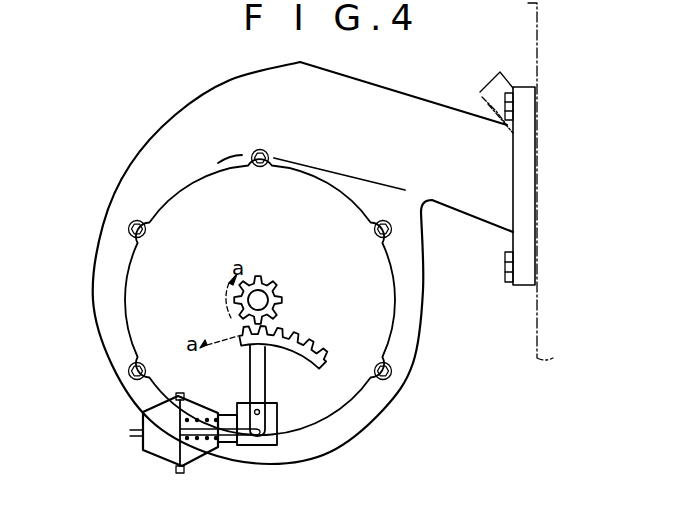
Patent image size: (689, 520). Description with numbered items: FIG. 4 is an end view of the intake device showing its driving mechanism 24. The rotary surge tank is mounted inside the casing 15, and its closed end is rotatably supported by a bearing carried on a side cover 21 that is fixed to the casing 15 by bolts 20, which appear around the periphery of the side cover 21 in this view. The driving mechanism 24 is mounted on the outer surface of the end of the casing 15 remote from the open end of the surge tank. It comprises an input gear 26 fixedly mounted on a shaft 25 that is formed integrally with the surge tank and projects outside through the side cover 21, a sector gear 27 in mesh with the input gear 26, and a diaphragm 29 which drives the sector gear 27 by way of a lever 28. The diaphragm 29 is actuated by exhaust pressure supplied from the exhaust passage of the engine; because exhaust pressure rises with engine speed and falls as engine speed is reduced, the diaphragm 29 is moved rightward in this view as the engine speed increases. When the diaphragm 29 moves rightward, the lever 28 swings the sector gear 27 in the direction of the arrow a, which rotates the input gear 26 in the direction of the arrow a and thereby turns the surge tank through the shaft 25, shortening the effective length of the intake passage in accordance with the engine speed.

The casing 15 is at (112, 372).
The bolts 20 is at (390, 238).
The side cover 21 is at (382, 341).
The driving mechanism 24 is at (141, 457).
The shaft 25 is at (259, 300).
The input gear 26 is at (266, 283).
The sector gear 27 is at (318, 362).
The lever 28 is at (250, 366).
The diaphragm 29 is at (200, 460).